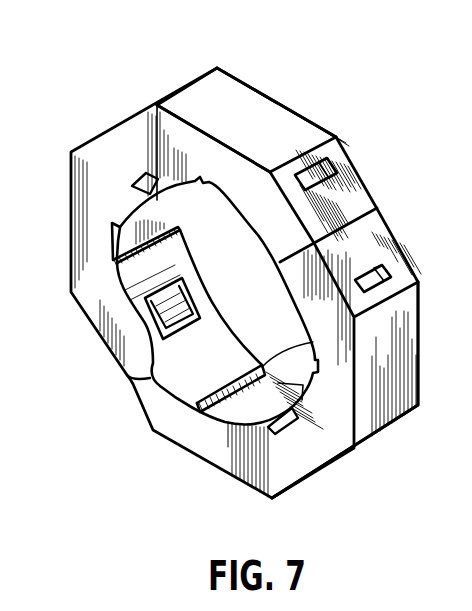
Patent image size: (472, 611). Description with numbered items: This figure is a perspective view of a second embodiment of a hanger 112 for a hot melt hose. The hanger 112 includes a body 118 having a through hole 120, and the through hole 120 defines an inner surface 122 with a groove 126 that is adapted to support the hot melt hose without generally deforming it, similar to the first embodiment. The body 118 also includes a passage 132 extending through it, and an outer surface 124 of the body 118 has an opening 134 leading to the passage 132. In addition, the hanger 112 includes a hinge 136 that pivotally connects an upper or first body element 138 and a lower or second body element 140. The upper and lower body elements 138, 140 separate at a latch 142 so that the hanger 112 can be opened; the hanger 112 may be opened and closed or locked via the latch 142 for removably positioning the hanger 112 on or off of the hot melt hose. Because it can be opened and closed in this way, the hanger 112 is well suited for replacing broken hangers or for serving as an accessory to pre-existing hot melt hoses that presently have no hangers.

The hanger 112 is at (320, 60).
The body 118 is at (97, 121).
The through hole 120 is at (185, 372).
The inner surface 122 is at (222, 362).
The outer surface 124 is at (149, 121).
The groove 126 is at (205, 187).
The passage 132 is at (331, 164).
The opening 134 is at (338, 181).
The hinge 136 is at (203, 277).
The first body element 138 is at (176, 87).
The second body element 140 is at (324, 472).
The latch 142 is at (380, 198).